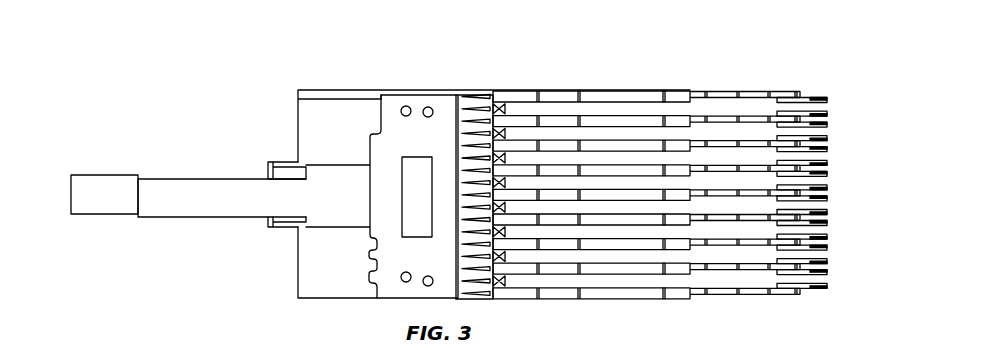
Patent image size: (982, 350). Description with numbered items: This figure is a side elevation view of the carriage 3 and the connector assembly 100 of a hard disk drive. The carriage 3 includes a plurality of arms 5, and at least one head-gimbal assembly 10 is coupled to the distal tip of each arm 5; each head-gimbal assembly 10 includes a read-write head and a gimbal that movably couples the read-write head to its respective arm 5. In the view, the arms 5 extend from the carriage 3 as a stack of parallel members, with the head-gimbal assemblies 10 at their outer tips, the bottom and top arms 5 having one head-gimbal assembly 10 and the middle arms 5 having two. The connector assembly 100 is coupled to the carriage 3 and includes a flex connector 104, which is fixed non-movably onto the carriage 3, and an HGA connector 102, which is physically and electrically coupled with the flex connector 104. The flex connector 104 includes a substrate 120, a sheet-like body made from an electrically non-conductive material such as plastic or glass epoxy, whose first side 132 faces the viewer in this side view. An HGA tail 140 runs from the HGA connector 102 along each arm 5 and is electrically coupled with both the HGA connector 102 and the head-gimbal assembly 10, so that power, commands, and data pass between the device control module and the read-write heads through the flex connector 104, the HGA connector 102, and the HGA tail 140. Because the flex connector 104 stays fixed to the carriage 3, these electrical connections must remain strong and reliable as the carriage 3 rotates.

The carriage 3 is at (360, 85).
The flex connector 104 is at (440, 92).
The substrate 120 is at (389, 92).
The first side 132 is at (440, 107).
The connector assembly 100 is at (495, 81).
The HGA connector 102 is at (511, 100).
The HGA tail 140 is at (597, 122).
The arm 5 is at (673, 89).
The head-gimbal assembly 10 is at (828, 88).